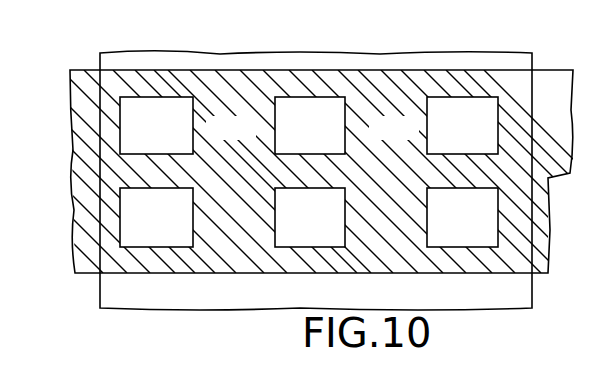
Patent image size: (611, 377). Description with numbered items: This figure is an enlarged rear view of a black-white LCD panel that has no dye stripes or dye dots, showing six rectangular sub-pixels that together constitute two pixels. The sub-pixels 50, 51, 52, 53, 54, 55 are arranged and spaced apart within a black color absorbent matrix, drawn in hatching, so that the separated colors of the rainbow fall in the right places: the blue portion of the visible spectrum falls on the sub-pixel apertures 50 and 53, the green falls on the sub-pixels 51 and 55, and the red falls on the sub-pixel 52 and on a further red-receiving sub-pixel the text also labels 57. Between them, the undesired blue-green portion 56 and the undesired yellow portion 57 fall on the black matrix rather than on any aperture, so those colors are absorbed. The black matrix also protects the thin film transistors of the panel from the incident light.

The sub-pixel aperture 50 is at (130, 238).
The sub-pixel 51 is at (302, 240).
The sub-pixel 52 is at (490, 237).
The sub-pixel aperture 53 is at (167, 103).
The sub-pixel 54 is at (322, 103).
The sub-pixel 55 is at (483, 103).
The blue-green portion 56 is at (235, 103).
The yellow portion 57 is at (393, 105).